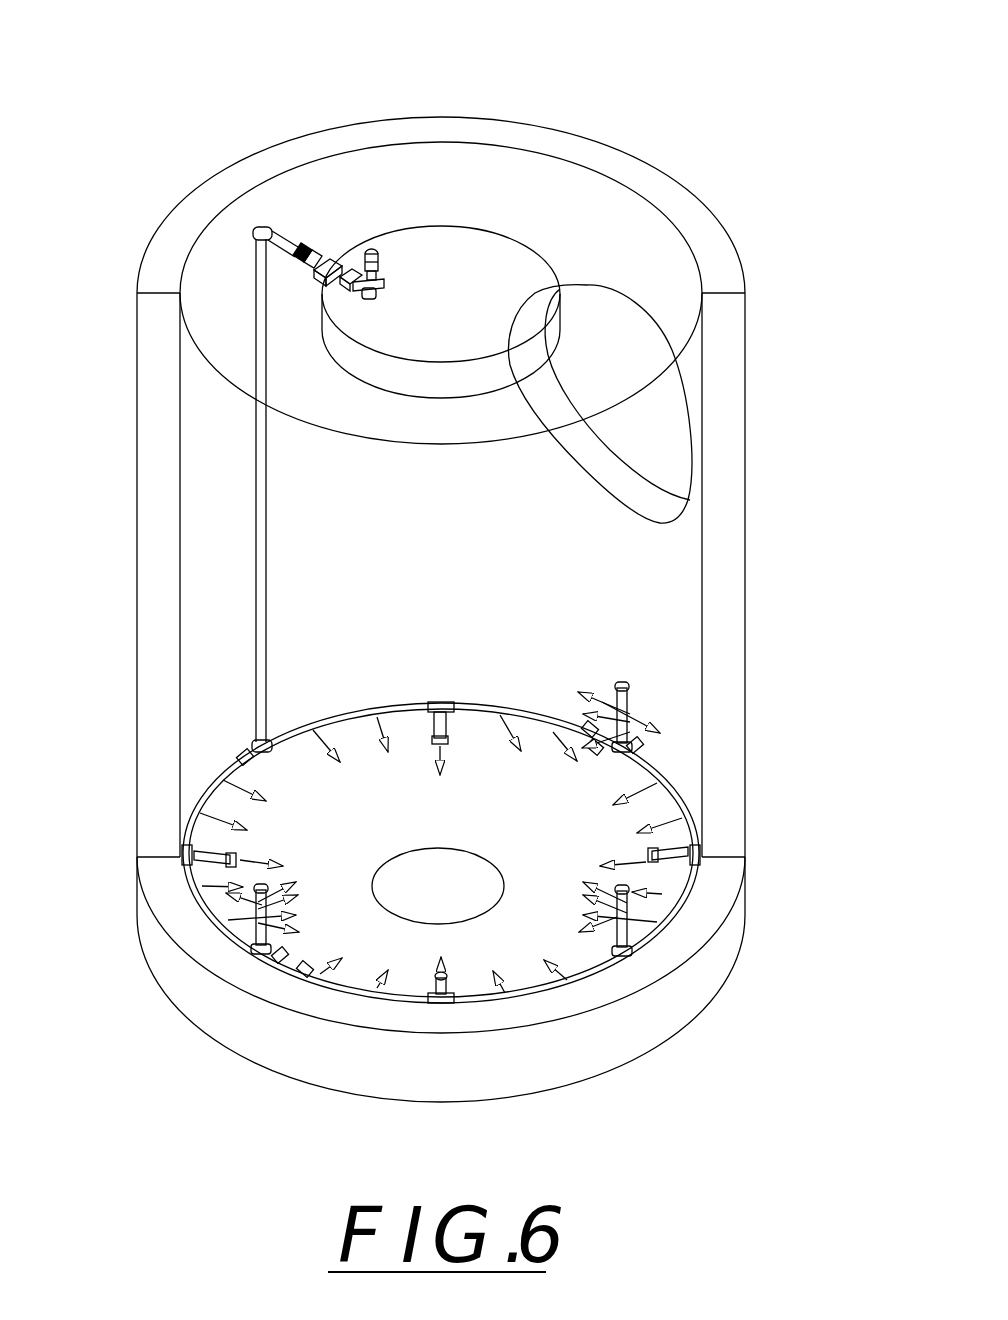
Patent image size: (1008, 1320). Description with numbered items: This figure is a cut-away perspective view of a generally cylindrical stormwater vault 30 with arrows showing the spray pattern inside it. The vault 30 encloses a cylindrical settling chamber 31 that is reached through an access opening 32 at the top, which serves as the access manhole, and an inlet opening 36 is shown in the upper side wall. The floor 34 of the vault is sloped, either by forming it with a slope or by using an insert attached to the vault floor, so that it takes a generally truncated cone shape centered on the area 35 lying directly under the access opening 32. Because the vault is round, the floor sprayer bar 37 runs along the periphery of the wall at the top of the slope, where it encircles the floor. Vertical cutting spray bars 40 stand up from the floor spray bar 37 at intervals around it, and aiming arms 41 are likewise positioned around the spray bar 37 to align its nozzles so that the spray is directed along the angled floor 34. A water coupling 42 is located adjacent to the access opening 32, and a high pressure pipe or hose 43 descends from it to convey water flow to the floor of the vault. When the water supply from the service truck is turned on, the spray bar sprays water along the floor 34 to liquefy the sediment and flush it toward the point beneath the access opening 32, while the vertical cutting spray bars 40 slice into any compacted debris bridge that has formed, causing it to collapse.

The stormwater vault 30 is at (718, 164).
The settling chamber 31 is at (670, 656).
The access opening 32 is at (510, 248).
The floor 34 is at (543, 820).
The area under the access opening 35 is at (463, 904).
The inlet opening 36 is at (688, 432).
The floor sprayer bar 37 is at (686, 922).
The vertical cutting spray bars 40 is at (630, 934).
The aiming arms 41 is at (690, 848).
The water coupling 42 is at (374, 246).
The high pressure pipe or hose 43 is at (252, 428).